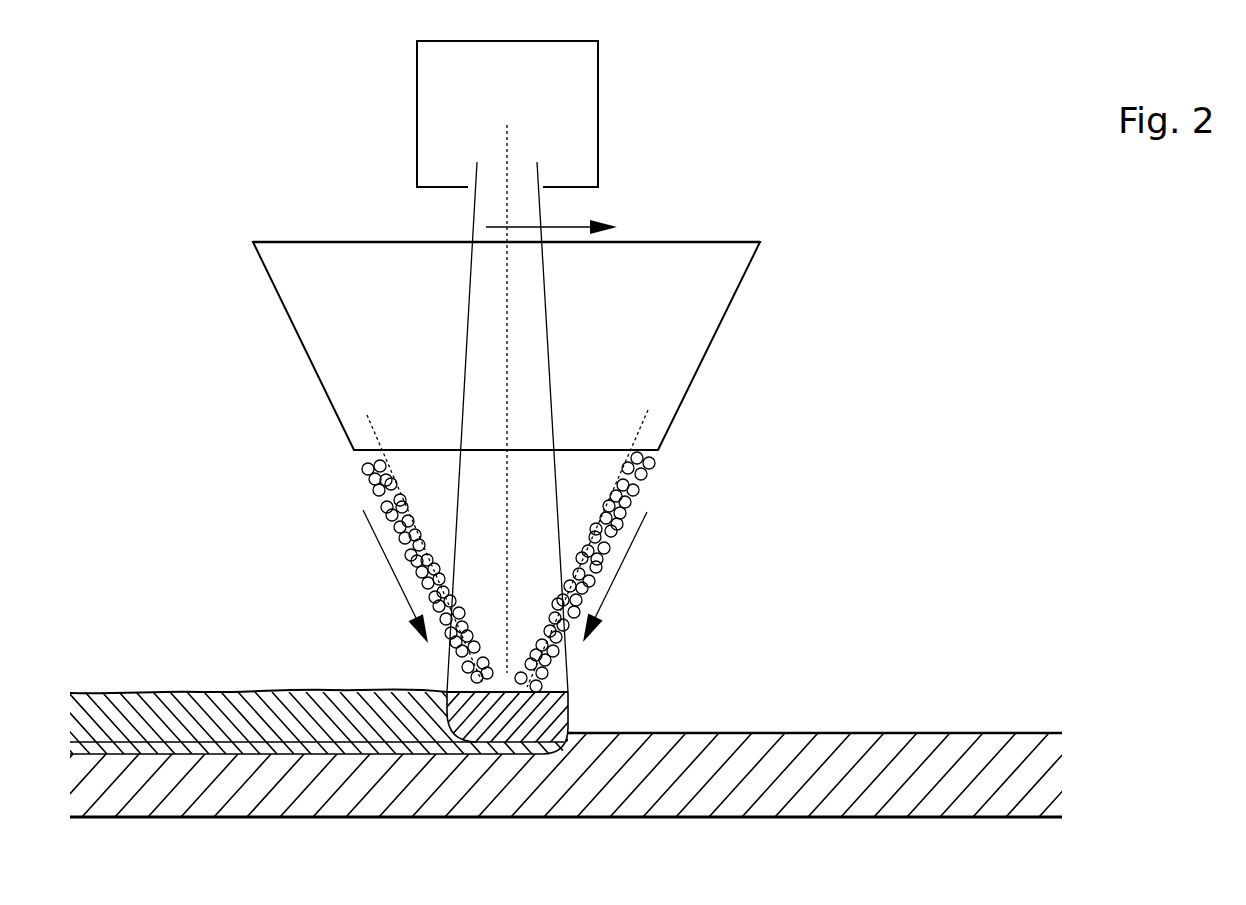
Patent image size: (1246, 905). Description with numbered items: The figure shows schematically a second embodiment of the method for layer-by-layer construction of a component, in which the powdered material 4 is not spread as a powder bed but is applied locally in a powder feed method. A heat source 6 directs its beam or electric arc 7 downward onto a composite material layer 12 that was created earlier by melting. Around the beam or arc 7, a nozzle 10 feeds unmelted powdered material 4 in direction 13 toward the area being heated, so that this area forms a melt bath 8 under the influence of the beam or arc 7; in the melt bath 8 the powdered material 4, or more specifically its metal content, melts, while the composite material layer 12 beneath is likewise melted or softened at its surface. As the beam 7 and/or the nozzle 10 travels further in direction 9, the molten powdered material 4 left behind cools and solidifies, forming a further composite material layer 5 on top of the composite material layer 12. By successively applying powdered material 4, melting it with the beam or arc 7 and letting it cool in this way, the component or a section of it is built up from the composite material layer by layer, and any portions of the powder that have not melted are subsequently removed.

The powdered material 4 is at (600, 570).
The composite material layer 5 is at (192, 703).
The heat source 6 is at (417, 78).
The beam or electric arc 7 is at (568, 670).
The melt bath 8 is at (478, 697).
The direction of travel 9 is at (564, 210).
The nozzle 10 is at (730, 308).
The composite material layer 12 is at (1003, 732).
The powder feed direction 13 is at (508, 548).